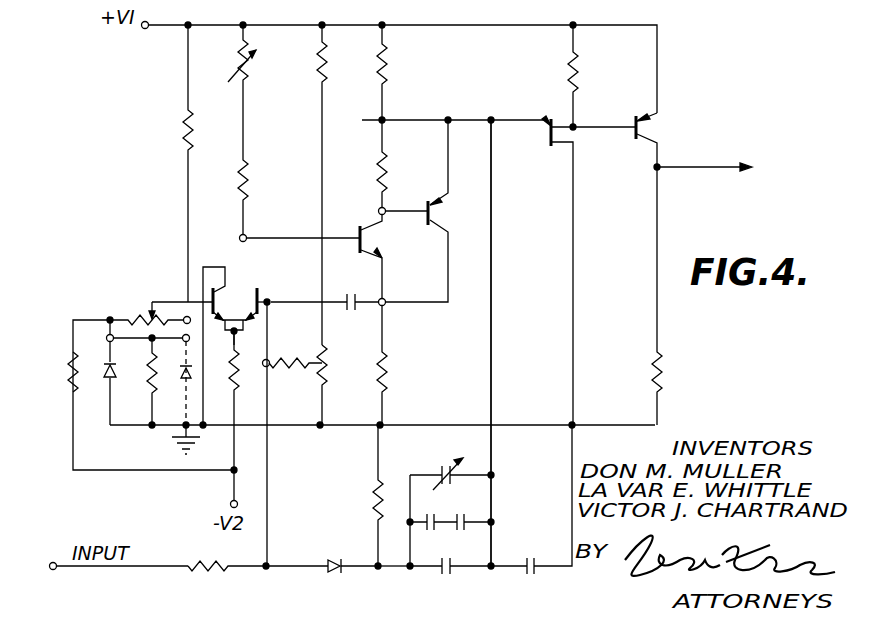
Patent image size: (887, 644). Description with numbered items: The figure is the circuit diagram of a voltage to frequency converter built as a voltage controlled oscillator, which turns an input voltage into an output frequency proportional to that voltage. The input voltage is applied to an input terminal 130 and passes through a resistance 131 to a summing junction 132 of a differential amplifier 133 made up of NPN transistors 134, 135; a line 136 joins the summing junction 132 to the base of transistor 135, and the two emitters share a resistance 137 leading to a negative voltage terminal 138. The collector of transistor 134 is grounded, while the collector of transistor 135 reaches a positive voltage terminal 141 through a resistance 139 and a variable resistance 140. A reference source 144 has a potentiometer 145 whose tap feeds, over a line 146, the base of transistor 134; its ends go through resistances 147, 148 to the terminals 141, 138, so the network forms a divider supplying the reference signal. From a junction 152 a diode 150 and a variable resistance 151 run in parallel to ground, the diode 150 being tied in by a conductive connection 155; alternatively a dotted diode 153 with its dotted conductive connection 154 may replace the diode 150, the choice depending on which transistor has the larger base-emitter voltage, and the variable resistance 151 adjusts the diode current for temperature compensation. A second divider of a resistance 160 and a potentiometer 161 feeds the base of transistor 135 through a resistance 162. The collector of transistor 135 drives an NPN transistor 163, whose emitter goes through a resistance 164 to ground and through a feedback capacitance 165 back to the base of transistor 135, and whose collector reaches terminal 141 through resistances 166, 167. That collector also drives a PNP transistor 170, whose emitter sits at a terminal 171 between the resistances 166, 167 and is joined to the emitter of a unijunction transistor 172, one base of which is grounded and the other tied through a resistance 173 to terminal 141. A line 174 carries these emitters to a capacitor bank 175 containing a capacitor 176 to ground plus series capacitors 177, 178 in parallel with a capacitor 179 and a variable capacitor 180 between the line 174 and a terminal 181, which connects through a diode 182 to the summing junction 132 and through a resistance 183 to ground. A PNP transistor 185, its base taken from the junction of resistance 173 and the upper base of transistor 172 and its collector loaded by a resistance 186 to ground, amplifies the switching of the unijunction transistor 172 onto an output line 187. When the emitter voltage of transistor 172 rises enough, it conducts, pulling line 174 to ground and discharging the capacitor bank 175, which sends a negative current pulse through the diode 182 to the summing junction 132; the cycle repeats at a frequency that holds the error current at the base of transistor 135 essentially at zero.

The input terminal 130 is at (55, 571).
The resistance 131 is at (227, 581).
The summing junction 132 is at (266, 570).
The differential amplifier 133 is at (235, 318).
The NPN transistor 134 is at (211, 289).
The NPN transistor 135 is at (258, 291).
The line 136 is at (264, 367).
The resistance 137 is at (231, 375).
The negative voltage terminal 138 is at (232, 474).
The resistance 139 is at (240, 186).
The variable resistance 140 is at (226, 57).
The positive voltage terminal 141 is at (144, 29).
The reference source 144 is at (110, 311).
The potentiometer 145 is at (134, 310).
The line 146 is at (150, 304).
The resistance 147 is at (186, 128).
The resistance 148 is at (69, 368).
The diode 150 is at (106, 378).
The variable resistance 151 is at (148, 386).
The junction 152 is at (108, 319).
The diode 153 is at (192, 368).
The conductive connection 154 is at (186, 316).
The conductive connection 155 is at (107, 340).
The resistance 160 is at (318, 72).
The potentiometer 161 is at (325, 361).
The resistance 162 is at (300, 352).
The NPN transistor 163 is at (357, 228).
The resistance 164 is at (386, 364).
The feedback capacitance 165 is at (360, 286).
The resistance 166 is at (380, 172).
The resistance 167 is at (380, 62).
The PNP transistor 170 is at (427, 225).
The terminal 171 is at (442, 123).
The unijunction transistor 172 is at (553, 148).
The resistance 173 is at (570, 97).
The line 174 is at (492, 318).
The capacitor bank 175 is at (478, 452).
The capacitor 176 is at (534, 558).
The capacitor 177 is at (431, 535).
The capacitor 178 is at (460, 531).
The capacitor 179 is at (450, 572).
The variable capacitor 180 is at (438, 473).
The terminal 181 is at (380, 570).
The diode 182 is at (334, 571).
The resistance 183 is at (372, 501).
The PNP transistor 185 is at (637, 118).
The resistance 186 is at (653, 366).
The output line 187 is at (712, 171).